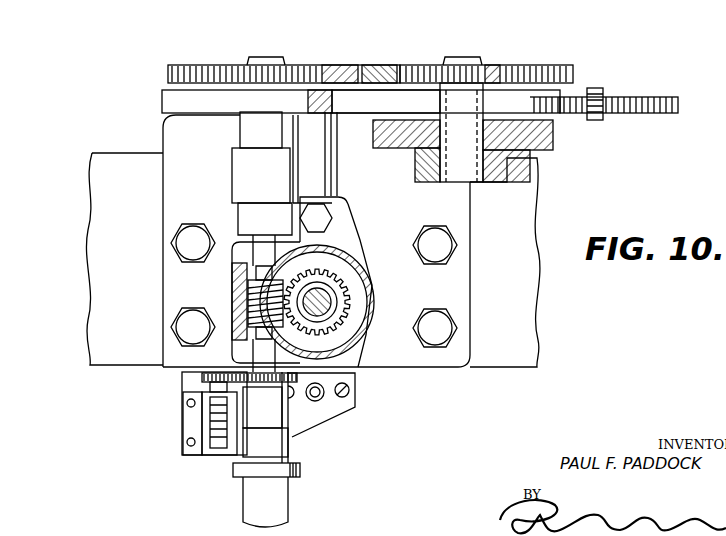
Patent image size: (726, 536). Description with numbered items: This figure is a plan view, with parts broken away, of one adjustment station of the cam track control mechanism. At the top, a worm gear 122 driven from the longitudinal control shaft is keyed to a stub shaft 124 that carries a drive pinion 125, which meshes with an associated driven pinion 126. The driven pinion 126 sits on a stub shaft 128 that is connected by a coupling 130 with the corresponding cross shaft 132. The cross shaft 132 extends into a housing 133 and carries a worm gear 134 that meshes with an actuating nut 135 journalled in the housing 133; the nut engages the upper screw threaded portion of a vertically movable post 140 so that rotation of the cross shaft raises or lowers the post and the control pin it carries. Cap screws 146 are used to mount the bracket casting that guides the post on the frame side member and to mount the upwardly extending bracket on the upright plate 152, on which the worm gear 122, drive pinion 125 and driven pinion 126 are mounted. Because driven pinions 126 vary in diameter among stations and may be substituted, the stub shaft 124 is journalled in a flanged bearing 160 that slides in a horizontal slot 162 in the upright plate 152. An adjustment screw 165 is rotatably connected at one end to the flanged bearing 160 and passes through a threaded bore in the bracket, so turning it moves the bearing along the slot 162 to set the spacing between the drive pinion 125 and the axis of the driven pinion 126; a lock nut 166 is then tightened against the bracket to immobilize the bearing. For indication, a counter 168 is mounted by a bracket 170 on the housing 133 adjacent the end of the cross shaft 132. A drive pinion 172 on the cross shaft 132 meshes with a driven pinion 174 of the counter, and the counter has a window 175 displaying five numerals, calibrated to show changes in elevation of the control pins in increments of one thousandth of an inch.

The worm gear 122 is at (540, 150).
The stub shaft 124 is at (472, 182).
The drive pinion 125 is at (546, 64).
The driven pinion 126 is at (304, 66).
The stub shaft 128 is at (248, 97).
The coupling 130 is at (250, 165).
The cross shaft 132 is at (279, 497).
The housing 133 is at (356, 253).
The worm gear 134 is at (250, 291).
The actuating nut 135 is at (336, 333).
The vertically movable post 140 is at (331, 298).
The cap screws 146 is at (190, 240).
The upright plate 152 is at (334, 114).
The flanged bearing 160 is at (463, 99).
The horizontal slot 162 is at (371, 99).
The adjustment screw 165 is at (637, 96).
The lock nut 166 is at (601, 120).
The counter 168 is at (200, 428).
The bracket 170 is at (333, 403).
The drive pinion 172 is at (350, 401).
The driven pinion 174 is at (172, 356).
The window 175 is at (218, 441).